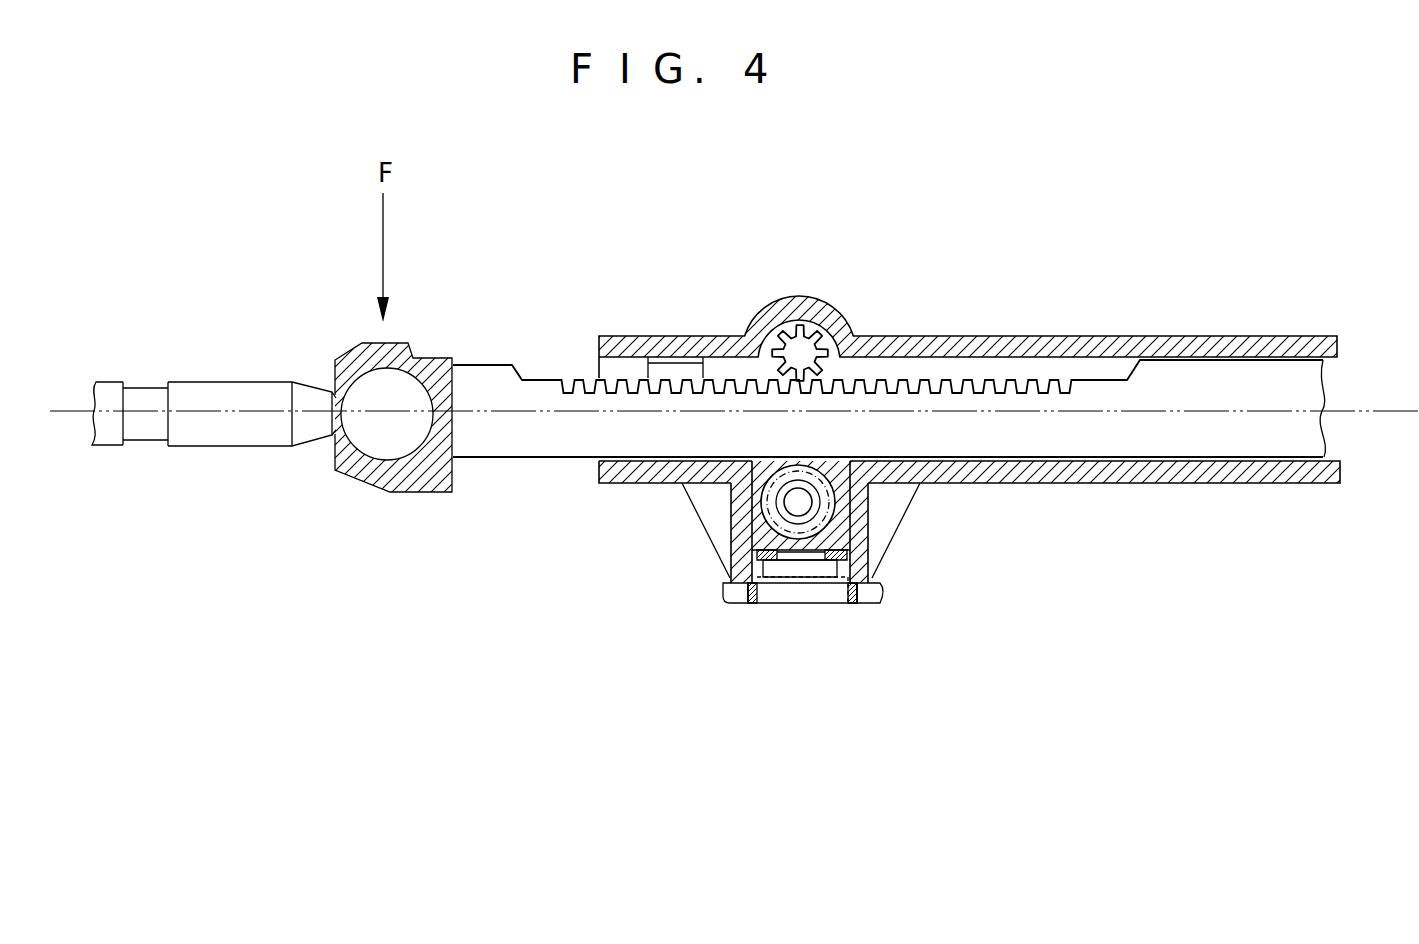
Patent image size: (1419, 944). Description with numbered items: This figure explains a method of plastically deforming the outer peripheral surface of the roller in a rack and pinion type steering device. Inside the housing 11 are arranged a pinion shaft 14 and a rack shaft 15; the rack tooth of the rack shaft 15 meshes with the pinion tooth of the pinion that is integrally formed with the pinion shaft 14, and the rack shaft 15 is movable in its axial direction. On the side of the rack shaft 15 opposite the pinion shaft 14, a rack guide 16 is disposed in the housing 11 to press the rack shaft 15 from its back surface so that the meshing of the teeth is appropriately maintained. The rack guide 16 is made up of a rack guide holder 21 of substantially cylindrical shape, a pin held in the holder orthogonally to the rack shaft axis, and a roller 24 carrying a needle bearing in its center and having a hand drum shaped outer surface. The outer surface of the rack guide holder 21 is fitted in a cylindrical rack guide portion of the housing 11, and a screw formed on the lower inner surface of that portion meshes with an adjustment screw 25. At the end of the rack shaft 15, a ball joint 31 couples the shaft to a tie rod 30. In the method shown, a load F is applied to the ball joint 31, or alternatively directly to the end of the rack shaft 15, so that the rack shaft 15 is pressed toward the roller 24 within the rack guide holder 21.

The housing 11 is at (1083, 337).
The pinion shaft 14 is at (805, 345).
The rack shaft 15 is at (518, 443).
The rack guide 16 is at (740, 523).
The rack guide holder 21 is at (853, 535).
The roller 24 is at (837, 493).
The adjustment screw 25 is at (842, 570).
The tie rod 30 is at (228, 395).
The ball joint 31 is at (400, 477).